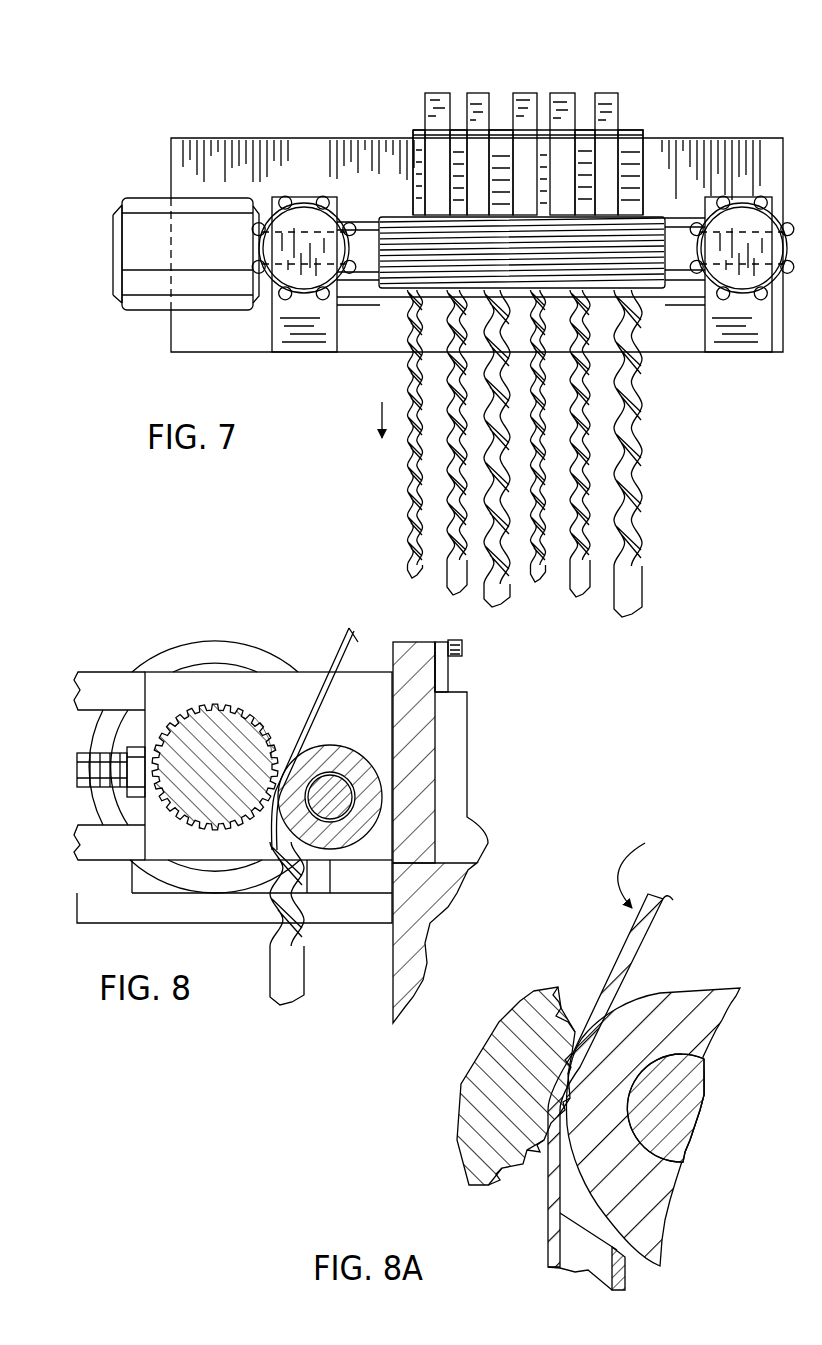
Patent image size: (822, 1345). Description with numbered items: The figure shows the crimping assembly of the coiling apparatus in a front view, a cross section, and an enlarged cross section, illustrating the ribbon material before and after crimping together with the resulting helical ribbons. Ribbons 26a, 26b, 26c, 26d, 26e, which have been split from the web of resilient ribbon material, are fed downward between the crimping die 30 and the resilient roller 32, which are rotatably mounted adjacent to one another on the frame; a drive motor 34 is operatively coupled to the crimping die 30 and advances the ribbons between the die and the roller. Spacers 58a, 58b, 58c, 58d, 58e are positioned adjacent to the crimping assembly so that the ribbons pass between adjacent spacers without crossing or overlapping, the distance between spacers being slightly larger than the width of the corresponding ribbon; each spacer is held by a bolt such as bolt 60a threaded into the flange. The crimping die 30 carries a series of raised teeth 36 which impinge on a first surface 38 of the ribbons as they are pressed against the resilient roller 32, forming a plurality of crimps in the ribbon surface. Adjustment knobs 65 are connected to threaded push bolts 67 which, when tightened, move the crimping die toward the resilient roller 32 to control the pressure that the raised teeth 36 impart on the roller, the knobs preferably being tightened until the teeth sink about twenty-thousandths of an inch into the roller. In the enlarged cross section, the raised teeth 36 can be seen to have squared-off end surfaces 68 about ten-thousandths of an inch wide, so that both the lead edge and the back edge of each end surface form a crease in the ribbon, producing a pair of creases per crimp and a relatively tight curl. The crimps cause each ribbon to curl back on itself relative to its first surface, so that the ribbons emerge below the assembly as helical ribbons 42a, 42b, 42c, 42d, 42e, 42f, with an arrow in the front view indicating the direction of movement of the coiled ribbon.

In FIG. 7, the ribbon 26a is at (638, 148).
In FIG. 7, the ribbon 26b is at (608, 167).
In FIG. 8A, the ribbon 26b is at (632, 940).
In FIG. 7, the ribbon 26c is at (523, 153).
In FIG. 7, the ribbon 26d is at (473, 160).
In FIG. 7, the ribbon 26e is at (432, 152).
In FIG. 8, the crimping die 30 is at (192, 730).
In FIG. 8A, the crimping die 30 is at (495, 1057).
In FIG. 8, the resilient roller 32 is at (335, 762).
In FIG. 8A, the resilient roller 32 is at (679, 1005).
In FIG. 7, the drive motor 34 is at (147, 283).
In FIG. 8, the raised teeth 36 is at (260, 723).
In FIG. 8A, the raised teeth 36 is at (565, 1008).
In FIG. 8A, the first surface 38 is at (639, 863).
In FIG. 7, the helical ribbon 42a is at (625, 590).
In FIG. 7, the helical ribbon 42b is at (582, 533).
In FIG. 8, the helical ribbon 42b is at (291, 1003).
In FIG. 7, the helical ribbon 42c is at (537, 580).
In FIG. 7, the helical ribbon 42d is at (505, 582).
In FIG. 7, the helical ribbon 42e is at (457, 573).
In FIG. 7, the helical ribbon 42f is at (413, 533).
In FIG. 7, the spacer 58a is at (613, 108).
In FIG. 8, the spacer 58a is at (447, 670).
In FIG. 7, the spacer 58b is at (573, 103).
In FIG. 7, the spacer 58c is at (518, 97).
In FIG. 7, the spacer 58d is at (481, 97).
In FIG. 7, the spacer 58e is at (437, 93).
In FIG. 8, the bolt 60a is at (460, 645).
In FIG. 7, the adjustment knob 65 is at (327, 250).
In FIG. 8, the threaded push bolt 67 is at (98, 777).
In FIG. 8A, the squared-off end surface 68 is at (502, 1174).